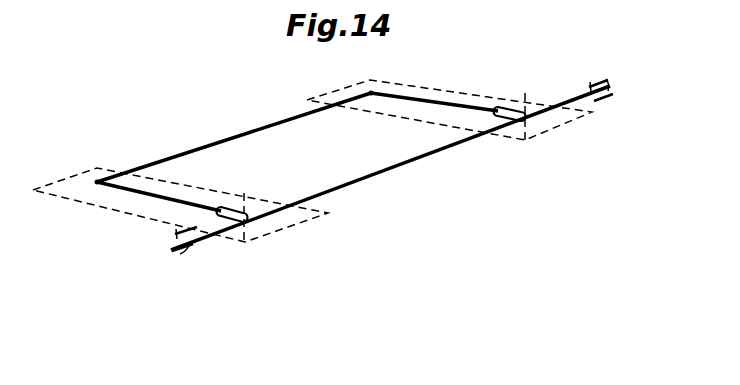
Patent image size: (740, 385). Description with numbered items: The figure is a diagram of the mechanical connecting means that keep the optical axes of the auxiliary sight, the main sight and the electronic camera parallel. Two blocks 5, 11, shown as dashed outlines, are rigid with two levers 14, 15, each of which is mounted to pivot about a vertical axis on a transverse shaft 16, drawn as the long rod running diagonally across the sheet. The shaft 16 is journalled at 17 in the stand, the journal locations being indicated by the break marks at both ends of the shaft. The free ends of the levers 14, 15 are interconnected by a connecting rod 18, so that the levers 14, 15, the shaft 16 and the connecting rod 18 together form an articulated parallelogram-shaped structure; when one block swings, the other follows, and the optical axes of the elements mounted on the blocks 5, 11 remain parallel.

The block 5 is at (65, 197).
The block 11 is at (472, 94).
The lever 14 is at (135, 193).
The lever 15 is at (412, 98).
The transverse shaft 16 is at (387, 166).
The journal 17 is at (187, 249).
The connecting rod 18 is at (208, 147).